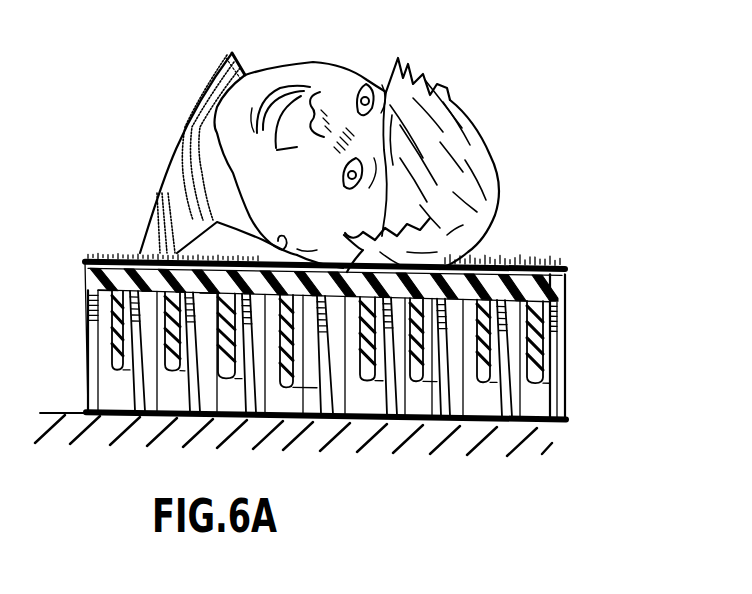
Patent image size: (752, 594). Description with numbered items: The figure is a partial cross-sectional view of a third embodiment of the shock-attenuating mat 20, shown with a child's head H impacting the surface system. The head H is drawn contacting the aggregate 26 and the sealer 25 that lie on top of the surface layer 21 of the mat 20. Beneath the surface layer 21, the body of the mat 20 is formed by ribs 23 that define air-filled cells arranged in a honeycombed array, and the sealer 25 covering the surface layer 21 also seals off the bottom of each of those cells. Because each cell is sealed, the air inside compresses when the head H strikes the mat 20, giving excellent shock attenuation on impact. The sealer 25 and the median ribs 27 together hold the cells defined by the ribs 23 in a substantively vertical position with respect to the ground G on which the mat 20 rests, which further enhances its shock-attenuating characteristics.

The shock-attenuating mat 20 is at (568, 346).
The surface layer 21 is at (97, 273).
The ribs 23 is at (358, 400).
The sealer 25 is at (88, 261).
The aggregate 26 is at (132, 259).
The median ribs 27 is at (113, 318).
The ground G is at (70, 425).
The child's head H is at (480, 188).